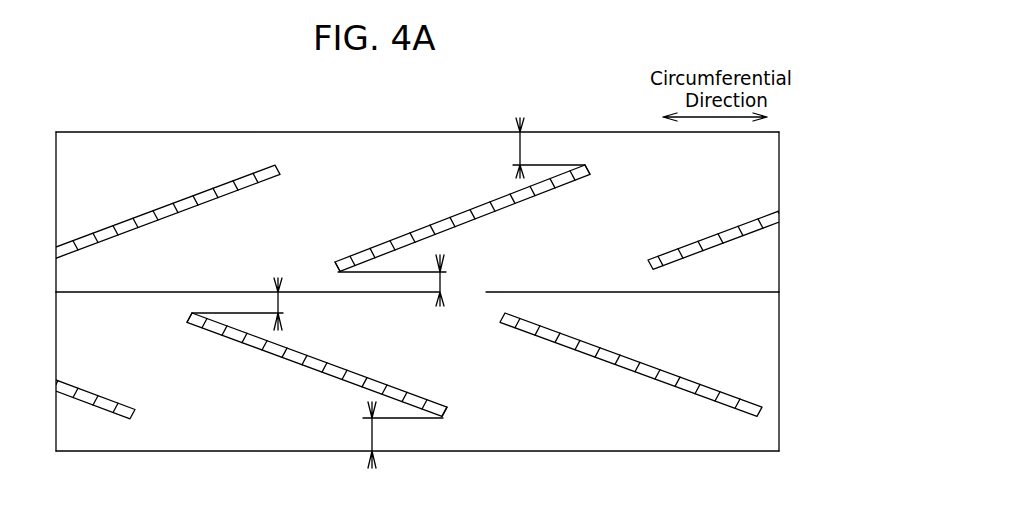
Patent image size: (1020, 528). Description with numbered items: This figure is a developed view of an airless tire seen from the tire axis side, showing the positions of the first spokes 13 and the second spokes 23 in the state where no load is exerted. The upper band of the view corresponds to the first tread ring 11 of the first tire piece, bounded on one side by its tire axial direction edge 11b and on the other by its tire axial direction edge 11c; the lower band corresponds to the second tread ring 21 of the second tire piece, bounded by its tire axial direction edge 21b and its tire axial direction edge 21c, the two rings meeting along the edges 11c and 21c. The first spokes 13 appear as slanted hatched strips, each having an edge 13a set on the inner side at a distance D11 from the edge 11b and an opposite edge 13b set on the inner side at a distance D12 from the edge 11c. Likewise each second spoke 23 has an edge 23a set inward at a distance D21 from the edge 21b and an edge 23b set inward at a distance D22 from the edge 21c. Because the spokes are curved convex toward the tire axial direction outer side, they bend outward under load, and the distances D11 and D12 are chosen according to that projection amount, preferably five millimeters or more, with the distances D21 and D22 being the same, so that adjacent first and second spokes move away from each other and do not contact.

The first tread ring 11 is at (430, 167).
The tire axial direction edge of the first tread ring 11b is at (182, 132).
The tire axial direction edge of the first tread ring 11c is at (745, 292).
The first spoke 13 is at (488, 202).
The edge of the first spoke 13a is at (586, 166).
The edge of the first spoke 13b is at (335, 263).
The second tread ring 21 is at (570, 417).
The tire axial direction edge of the second tread ring 21b is at (270, 451).
The tire axial direction edge of the second tread ring 21c is at (710, 292).
The second spoke 23 is at (327, 369).
The edge of the second spoke 23a is at (447, 410).
The edge of the second spoke 23b is at (191, 315).
The distance D11 is at (549, 148).
The distance D12 is at (411, 280).
The distance D21 is at (403, 435).
The distance D22 is at (254, 304).